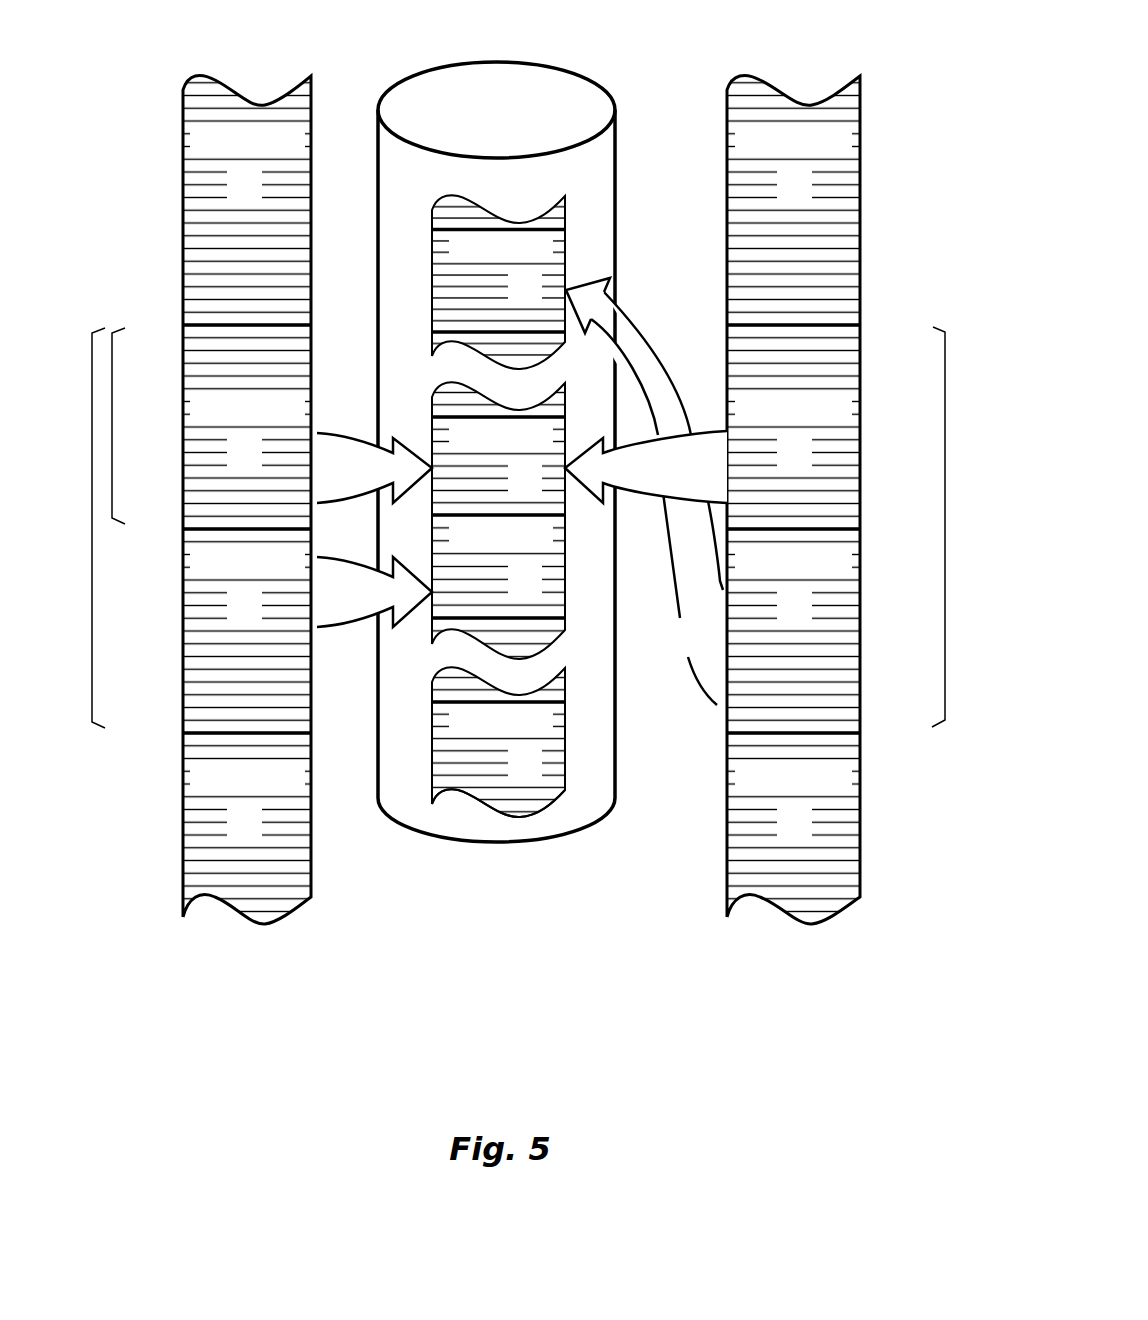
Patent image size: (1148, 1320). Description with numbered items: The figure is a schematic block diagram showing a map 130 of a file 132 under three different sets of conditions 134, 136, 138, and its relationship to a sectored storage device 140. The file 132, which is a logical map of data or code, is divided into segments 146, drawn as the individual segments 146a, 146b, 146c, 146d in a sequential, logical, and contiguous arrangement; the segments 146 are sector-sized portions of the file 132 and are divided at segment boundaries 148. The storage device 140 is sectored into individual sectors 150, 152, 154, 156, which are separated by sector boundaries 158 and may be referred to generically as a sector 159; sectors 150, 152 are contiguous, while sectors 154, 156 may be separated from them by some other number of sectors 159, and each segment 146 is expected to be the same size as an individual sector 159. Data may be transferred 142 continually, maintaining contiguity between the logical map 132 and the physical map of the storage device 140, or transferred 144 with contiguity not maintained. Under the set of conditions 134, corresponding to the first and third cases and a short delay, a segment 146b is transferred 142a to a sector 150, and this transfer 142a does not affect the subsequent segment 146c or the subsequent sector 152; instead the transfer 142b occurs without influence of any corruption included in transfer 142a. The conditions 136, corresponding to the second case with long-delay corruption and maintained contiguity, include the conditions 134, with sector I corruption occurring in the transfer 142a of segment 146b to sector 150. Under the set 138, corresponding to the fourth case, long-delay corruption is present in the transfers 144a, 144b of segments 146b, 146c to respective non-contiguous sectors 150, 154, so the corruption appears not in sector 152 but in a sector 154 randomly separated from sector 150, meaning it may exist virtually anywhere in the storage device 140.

The map 130 is at (353, 1021).
The file 132 is at (520, 497).
The set of conditions 134 is at (121, 326).
The set of conditions 136 is at (105, 729).
The set of conditions 138 is at (935, 326).
The storage device 140 is at (577, 88).
The transfer 142 is at (374, 380).
The transfer 142a is at (323, 482).
The transfer 142b is at (323, 604).
The transfer 144 is at (646, 457).
The transfer 144a is at (668, 480).
The transfer 144b is at (668, 647).
The segments 146 is at (518, 468).
The segment 146a is at (192, 240).
The segment 146b is at (192, 468).
The segment 146c is at (192, 688).
The segment 146d is at (192, 878).
The segment boundaries 148 is at (192, 522).
The sector 150 is at (432, 437).
The sector 152 is at (432, 548).
The sector 154 is at (432, 288).
The sector 156 is at (432, 760).
The sector boundaries 158 is at (565, 518).
The sector 159 is at (477, 824).